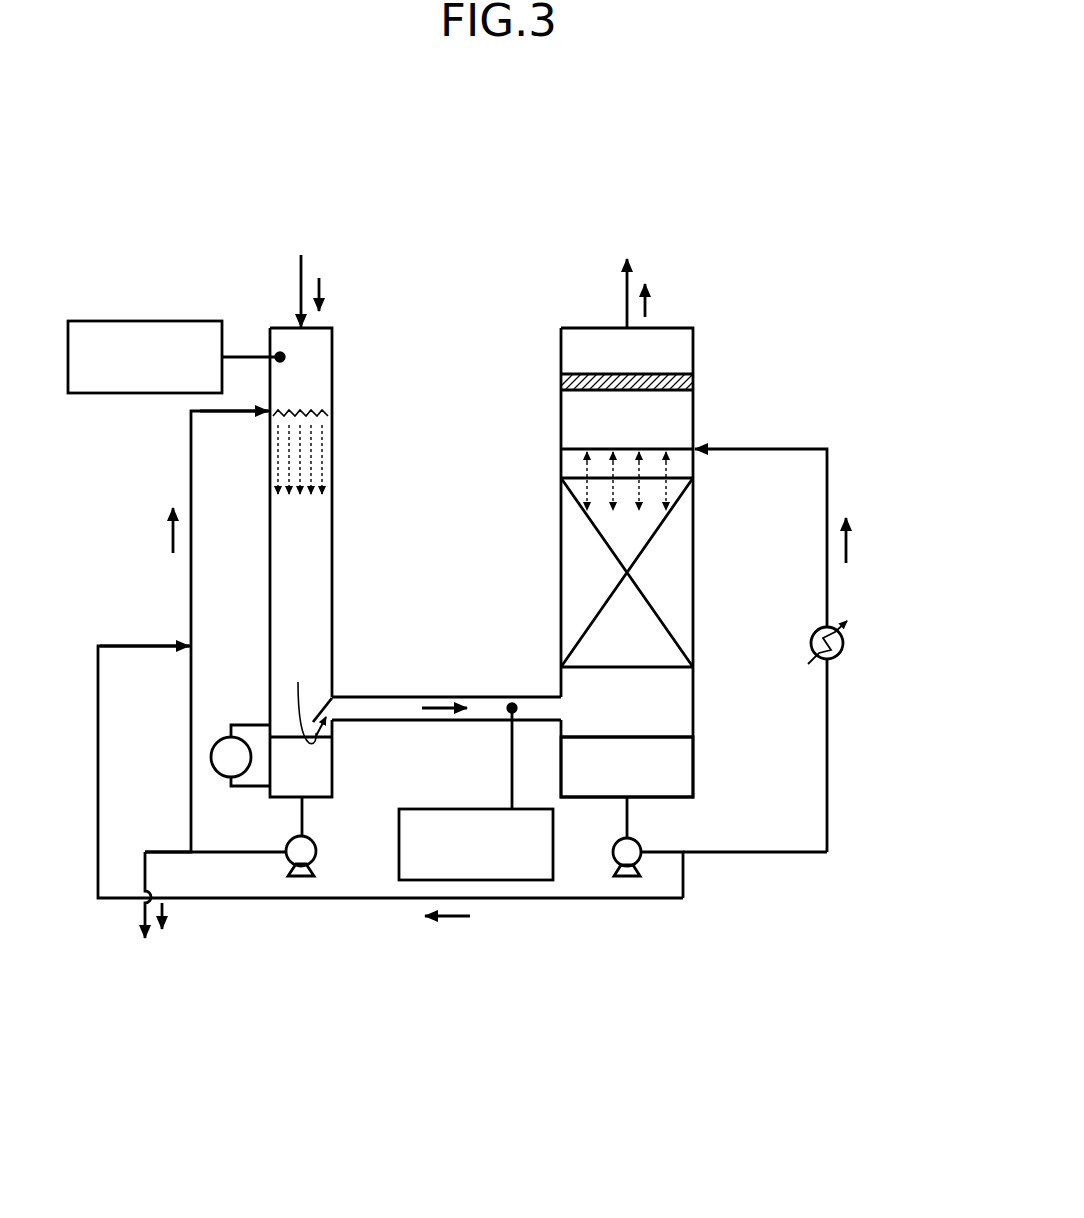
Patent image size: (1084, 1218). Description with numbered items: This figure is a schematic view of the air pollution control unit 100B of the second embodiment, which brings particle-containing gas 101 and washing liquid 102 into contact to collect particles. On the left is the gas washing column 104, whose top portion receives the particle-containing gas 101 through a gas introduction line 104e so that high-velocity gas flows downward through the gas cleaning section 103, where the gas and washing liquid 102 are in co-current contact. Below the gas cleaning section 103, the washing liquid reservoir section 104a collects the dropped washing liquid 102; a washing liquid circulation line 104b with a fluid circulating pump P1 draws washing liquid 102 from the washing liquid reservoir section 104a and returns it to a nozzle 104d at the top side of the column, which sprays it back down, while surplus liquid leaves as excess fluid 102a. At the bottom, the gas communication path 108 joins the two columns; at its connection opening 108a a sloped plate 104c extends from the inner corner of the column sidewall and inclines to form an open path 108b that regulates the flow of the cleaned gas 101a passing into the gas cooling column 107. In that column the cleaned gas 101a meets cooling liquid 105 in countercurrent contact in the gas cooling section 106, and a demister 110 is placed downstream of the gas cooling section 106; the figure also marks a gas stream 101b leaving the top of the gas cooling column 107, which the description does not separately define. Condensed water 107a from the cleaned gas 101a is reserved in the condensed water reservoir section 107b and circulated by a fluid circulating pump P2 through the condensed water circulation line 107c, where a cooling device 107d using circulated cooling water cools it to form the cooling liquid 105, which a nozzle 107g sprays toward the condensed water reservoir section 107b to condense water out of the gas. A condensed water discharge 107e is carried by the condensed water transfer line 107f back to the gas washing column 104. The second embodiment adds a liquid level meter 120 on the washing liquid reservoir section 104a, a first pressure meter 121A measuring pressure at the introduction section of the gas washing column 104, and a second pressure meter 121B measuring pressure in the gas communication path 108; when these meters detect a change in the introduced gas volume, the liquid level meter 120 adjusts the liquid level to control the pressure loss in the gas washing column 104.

The air pollution control unit 100B is at (624, 179).
The particle-containing gas 101 is at (323, 291).
The cleaned gas 101a is at (440, 690).
The treated water discharged from second column 101b is at (650, 302).
The washing liquid 102 is at (338, 470).
The excess fluid 102a is at (167, 913).
The gas cleaning section 103 is at (318, 527).
The gas washing column 104 is at (282, 311).
The washing liquid reservoir section 104a is at (333, 787).
The washing liquid circulation line 104b is at (190, 462).
The sloped plate 104c is at (329, 699).
The nozzle 104d is at (336, 413).
The gas introduction line 104e is at (306, 278).
The cooling liquid 105 is at (666, 464).
The gas cooling section 106 is at (590, 528).
The gas cooling column 107 is at (590, 311).
The condensed water 107a is at (846, 545).
The condensed water reservoir section 107b is at (696, 779).
The condensed water circulation line 107c is at (829, 469).
The cooling device 107d is at (845, 645).
The condensed water discharge 107e is at (456, 921).
The condensed water transfer line 107f is at (634, 278).
The nozzle 107g is at (687, 449).
The gas communication path 108 is at (505, 696).
The connection opening 108a is at (334, 703).
The open path 108b is at (333, 712).
The demister 110 is at (688, 380).
The liquid level meter 120 is at (226, 778).
The first pressure meter 121A is at (143, 320).
The second pressure meter 121B is at (467, 808).
The fluid circulating pump P1 is at (318, 852).
The fluid circulating pump P2 is at (613, 851).